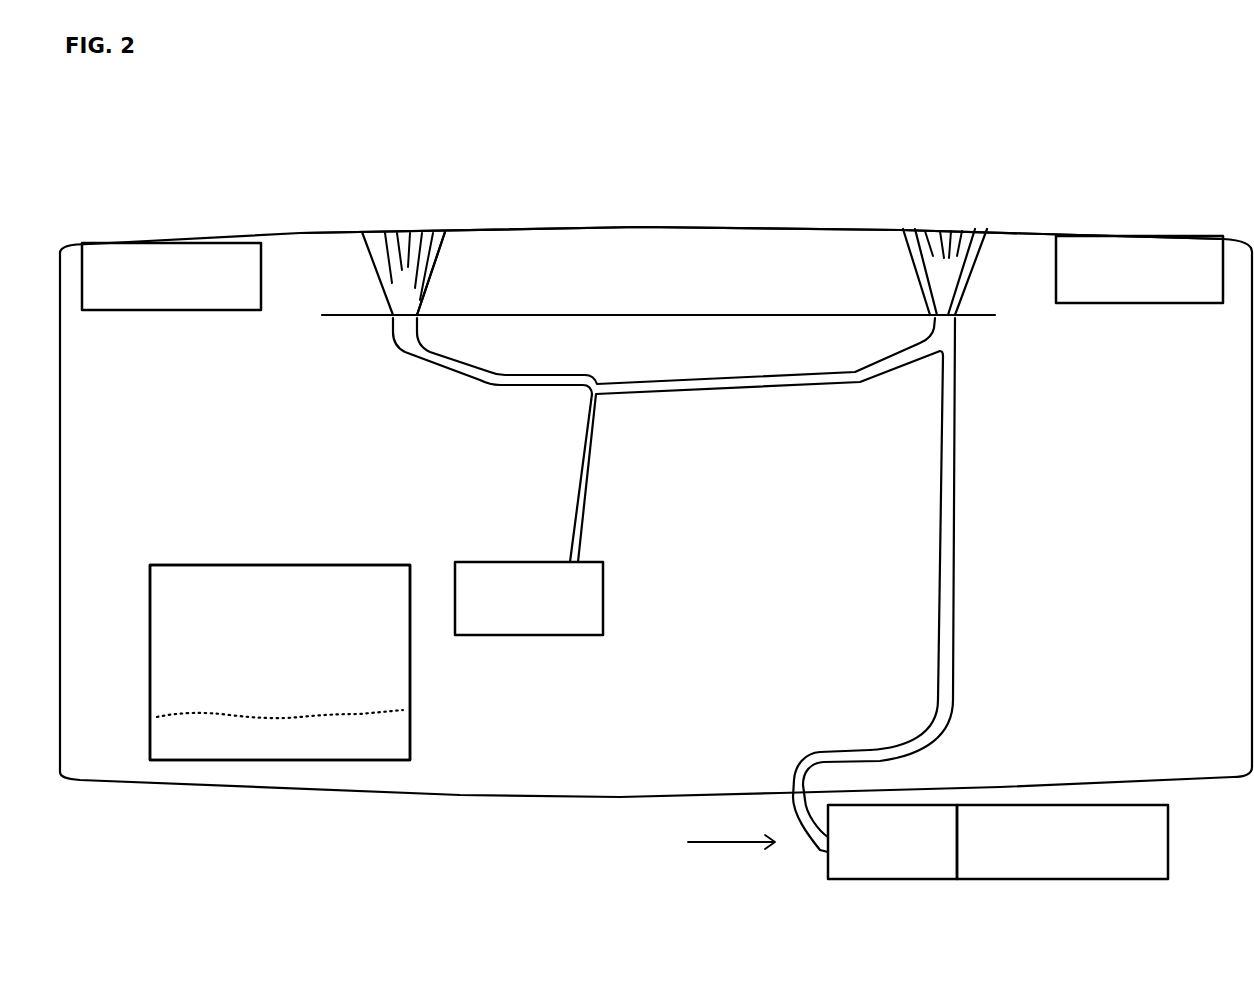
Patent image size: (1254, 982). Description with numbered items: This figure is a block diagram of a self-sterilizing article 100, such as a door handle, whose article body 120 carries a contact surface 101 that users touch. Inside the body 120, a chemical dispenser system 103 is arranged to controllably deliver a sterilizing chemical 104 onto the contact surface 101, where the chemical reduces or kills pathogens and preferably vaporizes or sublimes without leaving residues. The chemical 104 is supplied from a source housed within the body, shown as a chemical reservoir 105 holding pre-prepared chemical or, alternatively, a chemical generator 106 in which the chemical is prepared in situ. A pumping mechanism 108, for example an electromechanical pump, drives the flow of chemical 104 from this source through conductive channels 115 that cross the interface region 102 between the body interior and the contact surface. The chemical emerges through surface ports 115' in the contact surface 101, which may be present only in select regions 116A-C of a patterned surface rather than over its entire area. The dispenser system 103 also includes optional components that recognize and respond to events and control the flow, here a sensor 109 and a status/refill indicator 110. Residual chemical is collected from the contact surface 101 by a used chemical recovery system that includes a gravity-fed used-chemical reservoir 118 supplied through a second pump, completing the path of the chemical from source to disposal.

The self-sterilizing article 100 is at (662, 195).
The contact surface 101 is at (1056, 202).
The interface region 102 is at (835, 254).
The chemical dispenser system 103 is at (488, 466).
The chemical 104 is at (398, 740).
The chemical reservoir 105 is at (393, 661).
The chemical generator 106 is at (351, 689).
The pumping mechanism 108 is at (547, 621).
The sensor 109 is at (1157, 294).
The status/refill indicator 110 is at (188, 301).
The channels 115 is at (327, 216).
The surface ports 115' is at (662, 218).
The select regions 116A-C is at (448, 200).
The used-chemical reservoir 118 is at (1130, 864).
The article body 120 is at (428, 777).